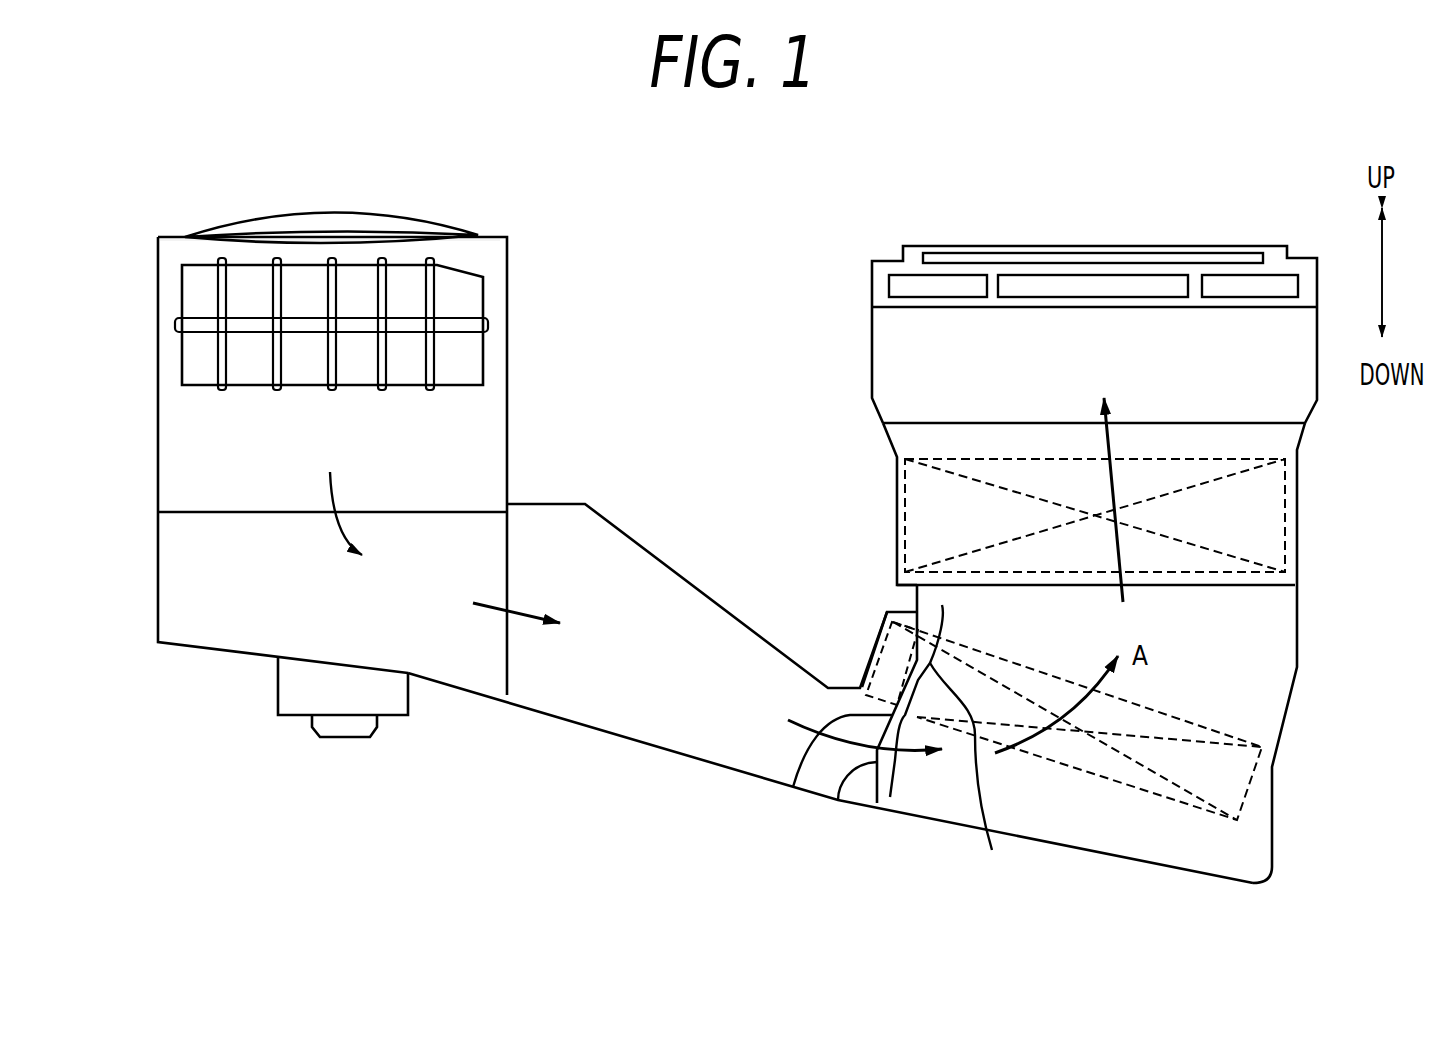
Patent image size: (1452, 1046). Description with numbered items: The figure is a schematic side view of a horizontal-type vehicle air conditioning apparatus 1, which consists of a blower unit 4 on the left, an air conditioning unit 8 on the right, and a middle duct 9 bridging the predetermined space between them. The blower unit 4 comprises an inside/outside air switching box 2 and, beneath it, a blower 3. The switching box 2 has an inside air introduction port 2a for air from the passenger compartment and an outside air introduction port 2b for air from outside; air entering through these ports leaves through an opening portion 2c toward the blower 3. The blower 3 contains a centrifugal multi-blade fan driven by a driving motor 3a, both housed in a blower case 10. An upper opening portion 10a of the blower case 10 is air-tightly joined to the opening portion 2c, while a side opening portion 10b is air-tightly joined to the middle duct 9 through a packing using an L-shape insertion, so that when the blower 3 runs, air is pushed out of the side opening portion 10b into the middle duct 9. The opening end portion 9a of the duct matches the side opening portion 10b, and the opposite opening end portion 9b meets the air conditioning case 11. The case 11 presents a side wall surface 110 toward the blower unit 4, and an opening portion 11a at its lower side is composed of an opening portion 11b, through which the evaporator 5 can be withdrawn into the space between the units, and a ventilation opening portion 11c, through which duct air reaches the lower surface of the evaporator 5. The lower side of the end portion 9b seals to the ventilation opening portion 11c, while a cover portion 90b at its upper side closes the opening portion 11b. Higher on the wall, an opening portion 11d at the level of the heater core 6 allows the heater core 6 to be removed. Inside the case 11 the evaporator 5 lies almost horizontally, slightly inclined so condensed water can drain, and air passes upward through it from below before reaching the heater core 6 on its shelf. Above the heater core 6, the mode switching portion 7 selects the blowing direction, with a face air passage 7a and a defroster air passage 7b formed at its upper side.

The air conditioning apparatus 1 is at (651, 780).
The inside/outside air switching box 2 is at (508, 368).
The inside air introduction port 2a is at (460, 305).
The outside air introduction port 2b is at (417, 212).
The opening portion 2c is at (368, 512).
The blower 3 is at (248, 670).
The driving motor 3a is at (408, 715).
The blower unit 4 is at (520, 268).
The evaporator 5 is at (1217, 728).
The heater core 6 is at (1248, 555).
The mode switching portion 7 is at (872, 350).
The face air passage 7a is at (935, 285).
The defroster air passage 7b is at (1050, 262).
The air conditioning unit 8 is at (832, 291).
The middle duct 9 is at (703, 590).
The opening end portion 9a is at (508, 647).
The opening end portion 9b is at (793, 787).
The blower case 10 is at (475, 668).
The upper opening portion 10a is at (427, 512).
The side opening portion 10b is at (508, 555).
The air conditioning case 11 is at (1262, 444).
The opening portion 11a is at (840, 803).
The opening portion 11b is at (992, 850).
The ventilation opening portion 11c is at (897, 757).
The opening portion 11d is at (895, 512).
The side wall surface 110 is at (910, 597).
The cover portion 90b is at (878, 647).